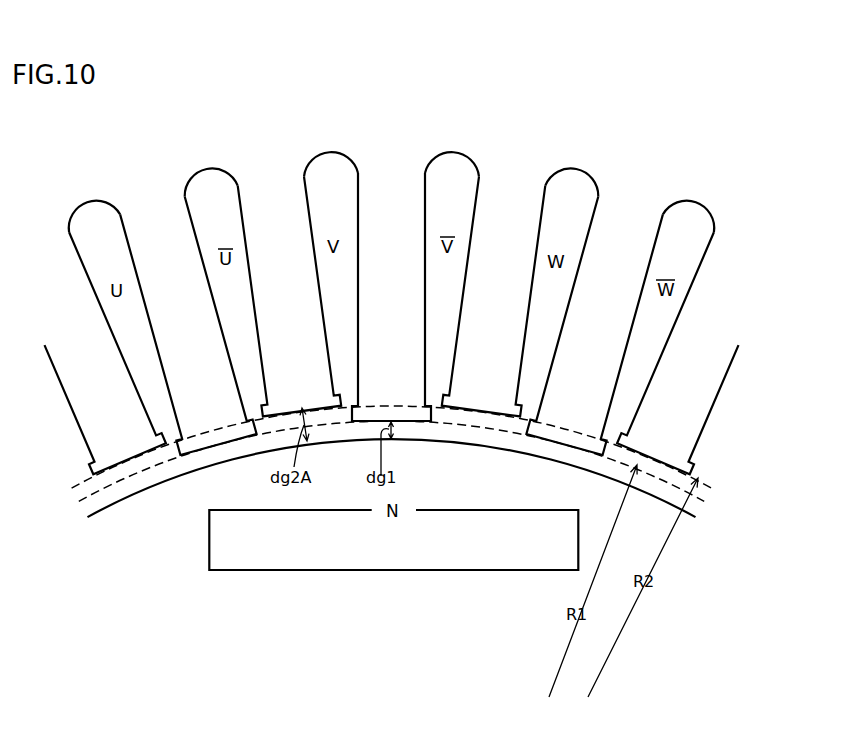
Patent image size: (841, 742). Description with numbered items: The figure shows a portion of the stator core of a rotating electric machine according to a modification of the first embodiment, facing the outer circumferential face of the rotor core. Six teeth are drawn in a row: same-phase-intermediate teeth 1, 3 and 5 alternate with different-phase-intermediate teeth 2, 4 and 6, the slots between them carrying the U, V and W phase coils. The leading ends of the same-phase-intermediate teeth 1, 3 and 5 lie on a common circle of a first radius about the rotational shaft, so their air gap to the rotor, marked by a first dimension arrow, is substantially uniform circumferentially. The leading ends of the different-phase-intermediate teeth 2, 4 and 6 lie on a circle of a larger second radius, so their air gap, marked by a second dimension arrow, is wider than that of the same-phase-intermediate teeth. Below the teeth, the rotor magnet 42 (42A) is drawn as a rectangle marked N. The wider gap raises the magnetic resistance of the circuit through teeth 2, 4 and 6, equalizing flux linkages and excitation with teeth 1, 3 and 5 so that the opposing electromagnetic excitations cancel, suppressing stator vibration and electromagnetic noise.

The same-phase-intermediate tooth 1 is at (157, 218).
The different-phase-intermediate tooth 2 is at (270, 200).
The same-phase-intermediate tooth 3 is at (391, 190).
The different-phase-intermediate tooth 4 is at (508, 197).
The same-phase-intermediate tooth 5 is at (627, 217).
The different-phase-intermediate tooth 6 is at (730, 277).
The permanent magnet 42 is at (393, 575).
The permanent magnet 42A is at (511, 571).